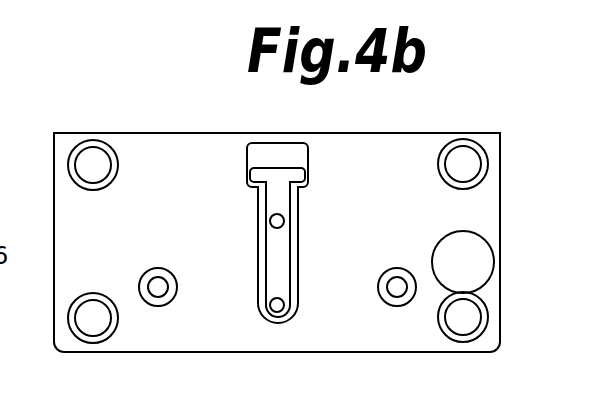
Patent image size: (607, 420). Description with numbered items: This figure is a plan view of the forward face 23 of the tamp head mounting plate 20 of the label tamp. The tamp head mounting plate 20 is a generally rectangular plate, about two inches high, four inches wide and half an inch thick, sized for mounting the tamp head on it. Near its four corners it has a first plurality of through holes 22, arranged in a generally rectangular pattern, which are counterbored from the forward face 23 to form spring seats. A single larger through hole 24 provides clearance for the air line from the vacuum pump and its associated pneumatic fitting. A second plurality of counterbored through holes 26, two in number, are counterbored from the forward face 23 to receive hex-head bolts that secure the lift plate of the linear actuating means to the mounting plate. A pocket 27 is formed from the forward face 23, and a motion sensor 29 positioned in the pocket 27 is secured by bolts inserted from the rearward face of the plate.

The tamp head mounting plate 20 is at (508, 292).
The first plurality of through holes 22 is at (88, 170).
The forward face 23 is at (378, 180).
The single through hole 24 is at (472, 263).
The second plurality of counterbored through holes 26 is at (163, 305).
The pocket 27 is at (266, 150).
The motion sensor 29 is at (279, 262).